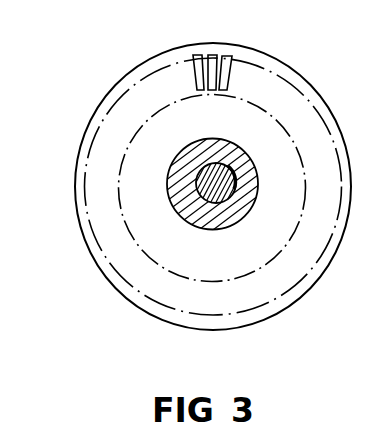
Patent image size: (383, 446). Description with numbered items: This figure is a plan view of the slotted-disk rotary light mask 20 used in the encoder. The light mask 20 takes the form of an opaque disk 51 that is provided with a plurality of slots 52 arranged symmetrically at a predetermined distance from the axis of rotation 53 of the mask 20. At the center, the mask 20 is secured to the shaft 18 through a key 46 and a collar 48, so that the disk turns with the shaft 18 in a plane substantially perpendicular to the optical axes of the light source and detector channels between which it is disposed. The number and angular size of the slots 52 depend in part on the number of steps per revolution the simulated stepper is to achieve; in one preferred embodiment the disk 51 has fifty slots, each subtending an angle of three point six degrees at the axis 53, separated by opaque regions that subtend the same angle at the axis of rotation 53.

The rotary light mask 20 is at (96, 83).
The opaque disk 51 is at (239, 95).
The slots 52 is at (210, 52).
The key 46 is at (174, 172).
The collar 48 is at (200, 207).
The axis of rotation 53 is at (244, 203).
The shaft 18 is at (203, 195).